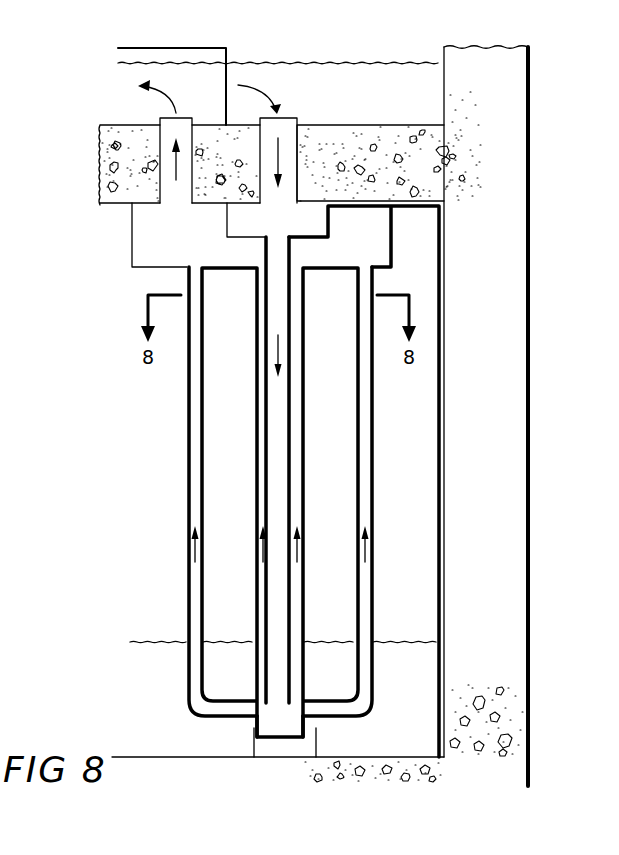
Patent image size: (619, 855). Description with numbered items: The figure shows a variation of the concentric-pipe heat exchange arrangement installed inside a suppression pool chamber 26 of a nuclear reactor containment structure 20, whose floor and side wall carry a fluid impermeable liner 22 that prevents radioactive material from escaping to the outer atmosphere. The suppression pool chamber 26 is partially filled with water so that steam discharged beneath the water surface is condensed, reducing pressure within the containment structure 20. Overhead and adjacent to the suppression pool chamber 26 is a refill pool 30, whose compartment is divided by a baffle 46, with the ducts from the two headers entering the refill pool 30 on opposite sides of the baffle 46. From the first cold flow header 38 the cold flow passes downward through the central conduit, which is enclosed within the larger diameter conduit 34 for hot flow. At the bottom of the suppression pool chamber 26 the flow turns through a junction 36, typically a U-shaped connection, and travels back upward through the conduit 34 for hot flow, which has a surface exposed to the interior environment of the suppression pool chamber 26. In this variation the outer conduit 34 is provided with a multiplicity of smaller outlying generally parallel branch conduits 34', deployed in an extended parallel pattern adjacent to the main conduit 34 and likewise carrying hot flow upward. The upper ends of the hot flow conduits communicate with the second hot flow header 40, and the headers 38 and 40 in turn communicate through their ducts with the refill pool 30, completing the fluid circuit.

The containment structure 20 is at (538, 503).
The fluid impermeable liner 22 is at (441, 395).
The suppression pool chamber 26 is at (118, 573).
The refill pool 30 is at (350, 62).
The conduit for hot flow 34 is at (306, 470).
The branch conduits 34' is at (273, 502).
The junction 36 is at (270, 721).
The first cold flow header 38 is at (227, 236).
The second hot flow header 40 is at (132, 243).
The baffle 46 is at (143, 48).